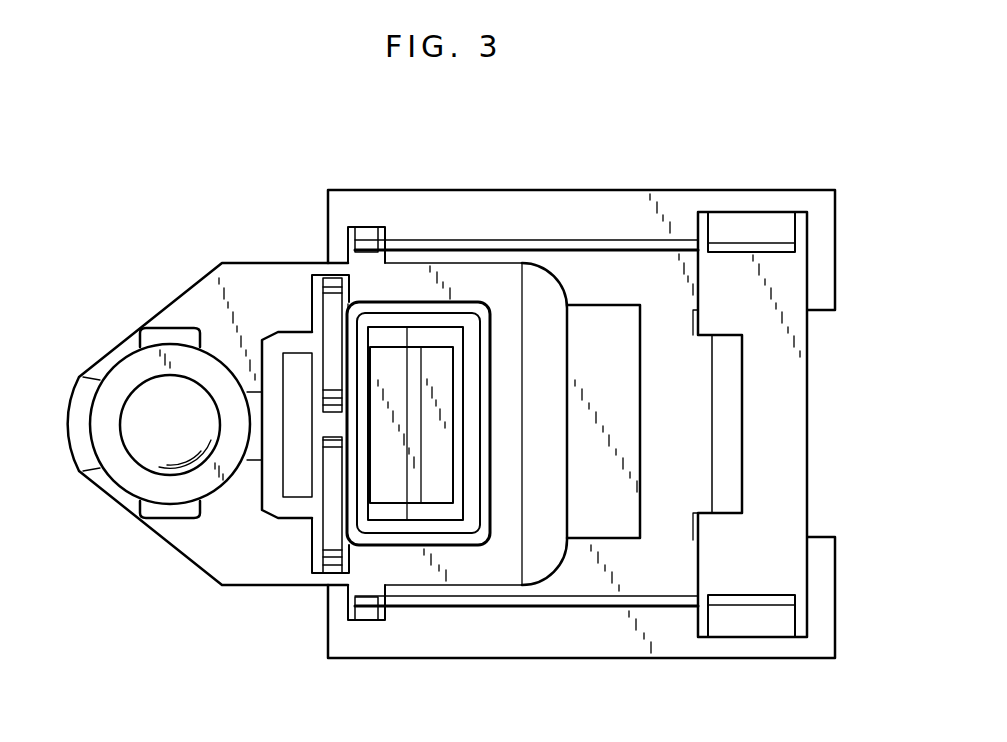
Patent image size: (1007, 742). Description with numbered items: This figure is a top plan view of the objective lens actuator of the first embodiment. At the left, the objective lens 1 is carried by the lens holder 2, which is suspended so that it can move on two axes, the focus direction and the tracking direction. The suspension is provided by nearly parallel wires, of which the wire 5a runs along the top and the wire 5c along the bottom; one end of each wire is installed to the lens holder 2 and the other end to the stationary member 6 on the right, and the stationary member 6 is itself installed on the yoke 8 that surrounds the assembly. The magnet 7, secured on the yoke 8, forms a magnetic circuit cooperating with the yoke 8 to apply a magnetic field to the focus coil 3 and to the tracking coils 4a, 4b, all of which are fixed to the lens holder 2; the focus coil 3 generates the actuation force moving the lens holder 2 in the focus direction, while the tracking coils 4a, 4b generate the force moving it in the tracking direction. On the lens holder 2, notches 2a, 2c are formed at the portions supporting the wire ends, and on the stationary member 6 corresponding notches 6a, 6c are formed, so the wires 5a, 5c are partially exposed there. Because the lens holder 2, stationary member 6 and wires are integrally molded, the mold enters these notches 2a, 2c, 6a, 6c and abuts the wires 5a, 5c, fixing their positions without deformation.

The objective lens 1 is at (157, 432).
The lens holder 2 is at (208, 543).
The notch 2a is at (366, 226).
The notch 2c is at (364, 623).
The focus coil 3 is at (392, 303).
The tracking coil 4a is at (330, 318).
The tracking coil 4b is at (325, 540).
The wire 5a is at (608, 240).
The wire 5c is at (562, 607).
The stationary member 6 is at (787, 425).
The notch 6a is at (751, 226).
The notch 6c is at (755, 620).
The magnet 7 is at (404, 368).
The yoke 8 is at (617, 643).